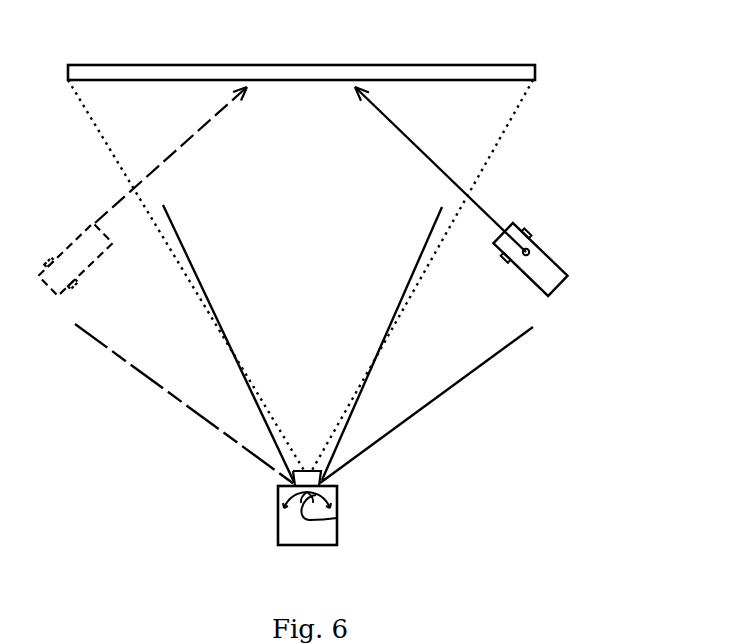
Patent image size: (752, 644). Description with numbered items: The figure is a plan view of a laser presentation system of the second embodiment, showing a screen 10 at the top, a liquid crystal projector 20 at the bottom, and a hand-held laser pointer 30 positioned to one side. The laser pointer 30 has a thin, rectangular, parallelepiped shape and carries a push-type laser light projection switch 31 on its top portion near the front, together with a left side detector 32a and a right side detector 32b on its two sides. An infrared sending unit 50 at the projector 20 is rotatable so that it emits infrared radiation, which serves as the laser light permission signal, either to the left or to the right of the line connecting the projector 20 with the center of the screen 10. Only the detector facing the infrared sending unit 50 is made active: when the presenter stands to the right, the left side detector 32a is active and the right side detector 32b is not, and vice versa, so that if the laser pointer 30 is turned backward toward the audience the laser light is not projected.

The screen 10 is at (293, 80).
The liquid crystal projector 20 is at (277, 525).
The laser pointer 30 is at (562, 268).
The laser light projection switch 31 is at (534, 247).
The left side detector 32a is at (505, 258).
The right side detector 32b is at (533, 232).
The infrared sending unit 50 is at (337, 518).